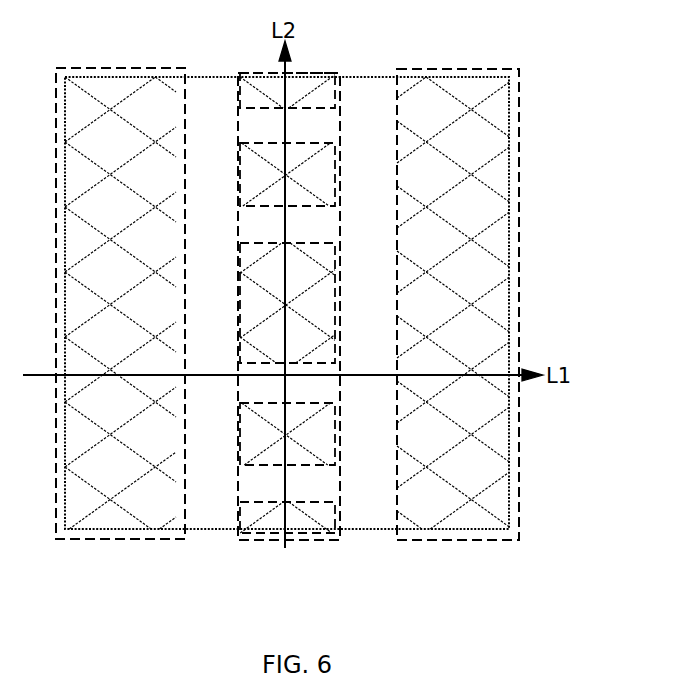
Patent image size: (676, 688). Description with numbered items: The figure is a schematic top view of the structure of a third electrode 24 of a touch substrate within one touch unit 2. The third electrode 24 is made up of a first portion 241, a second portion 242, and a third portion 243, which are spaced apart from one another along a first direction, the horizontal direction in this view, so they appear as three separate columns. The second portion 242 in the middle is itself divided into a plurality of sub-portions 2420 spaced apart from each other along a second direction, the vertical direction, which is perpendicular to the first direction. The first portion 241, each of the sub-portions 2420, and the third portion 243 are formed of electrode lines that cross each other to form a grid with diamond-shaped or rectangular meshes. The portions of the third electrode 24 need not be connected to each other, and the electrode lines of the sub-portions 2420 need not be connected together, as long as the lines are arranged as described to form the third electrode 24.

The touch unit 2 is at (485, 77).
The third electrode 24 is at (287, 315).
The first portion 241 is at (73, 540).
The second portion 242 is at (313, 295).
The third portion 243 is at (458, 322).
The sub-portions 2420 is at (342, 508).